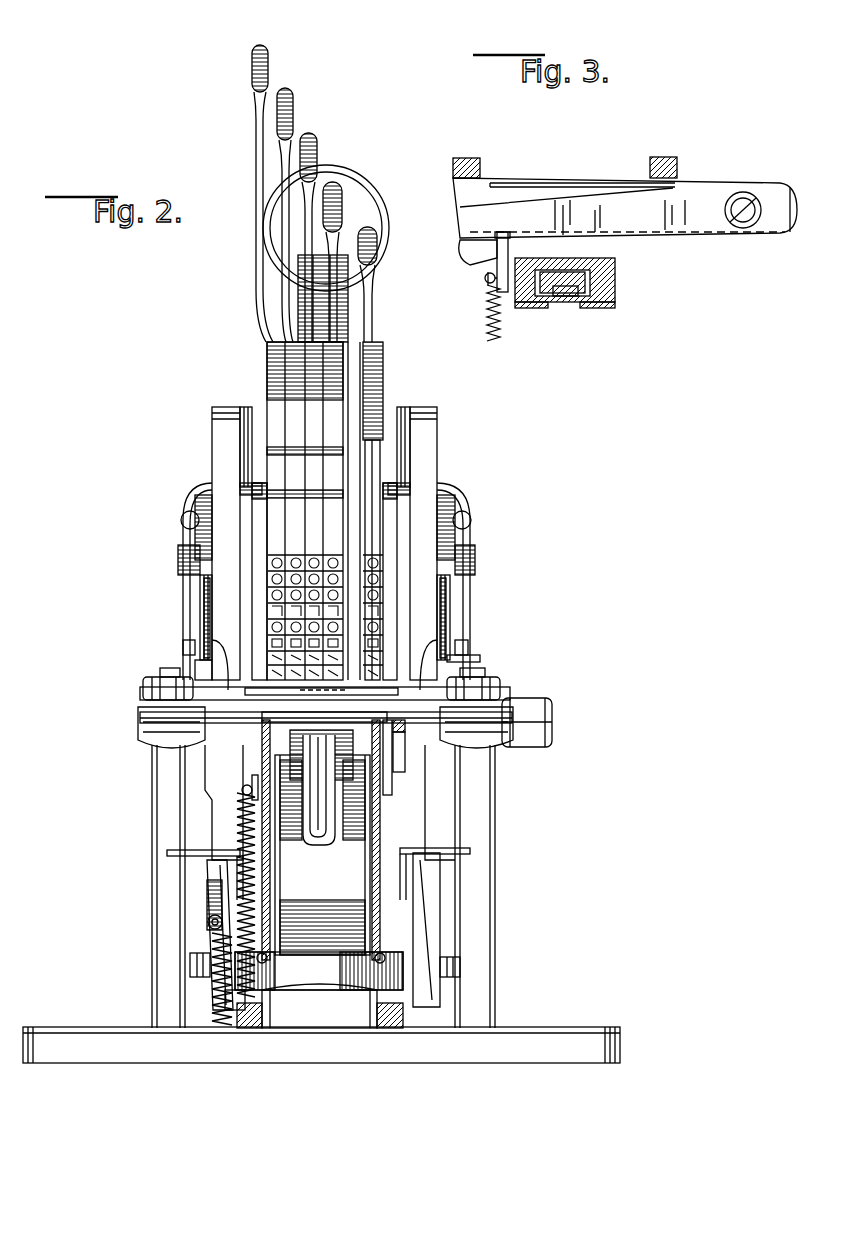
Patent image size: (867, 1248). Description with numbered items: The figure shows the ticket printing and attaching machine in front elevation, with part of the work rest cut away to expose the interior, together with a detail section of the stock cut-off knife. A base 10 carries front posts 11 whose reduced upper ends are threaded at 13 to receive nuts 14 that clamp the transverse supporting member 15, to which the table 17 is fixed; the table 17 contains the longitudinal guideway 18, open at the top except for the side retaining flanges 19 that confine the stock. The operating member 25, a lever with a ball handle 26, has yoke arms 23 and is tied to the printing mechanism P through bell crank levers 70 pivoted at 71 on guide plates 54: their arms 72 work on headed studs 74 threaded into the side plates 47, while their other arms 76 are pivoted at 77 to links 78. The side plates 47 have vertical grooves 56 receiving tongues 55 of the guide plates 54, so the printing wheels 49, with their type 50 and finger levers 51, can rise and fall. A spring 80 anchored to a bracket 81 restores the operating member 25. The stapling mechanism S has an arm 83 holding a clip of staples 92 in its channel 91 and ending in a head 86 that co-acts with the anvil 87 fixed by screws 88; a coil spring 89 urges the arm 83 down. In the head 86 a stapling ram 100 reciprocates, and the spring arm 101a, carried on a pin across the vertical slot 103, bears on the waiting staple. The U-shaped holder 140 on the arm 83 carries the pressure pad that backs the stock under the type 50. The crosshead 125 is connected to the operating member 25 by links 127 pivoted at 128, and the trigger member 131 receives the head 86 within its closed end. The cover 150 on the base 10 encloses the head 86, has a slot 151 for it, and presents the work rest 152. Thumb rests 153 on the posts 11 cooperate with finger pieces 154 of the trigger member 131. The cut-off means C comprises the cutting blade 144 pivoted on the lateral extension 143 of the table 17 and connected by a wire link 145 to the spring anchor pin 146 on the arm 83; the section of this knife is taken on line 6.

In FIG. 2, the section line 6- 6 is at (325, 5).
In FIG. 2, the base 10 is at (98, 1060).
In FIG. 2, the front posts 11 is at (150, 922).
In FIG. 2, the threaded upper end 13 is at (162, 672).
In FIG. 2, the nuts 14 is at (142, 680).
In FIG. 2, the transverse supporting member 15 is at (400, 740).
In FIG. 2, the table 17 is at (208, 698).
In FIG. 3, the table 17 is at (460, 194).
In FIG. 2, the longitudinal guideway 18 is at (170, 723).
In FIG. 3, the longitudinal guideway 18 is at (535, 180).
In FIG. 2, the side retaining flanges 19 is at (222, 672).
In FIG. 2, the yoke arms 23 is at (210, 830).
In FIG. 2, the operating member 25 is at (352, 320).
In FIG. 2, the ball handle 26 is at (352, 185).
In FIG. 2, the side plates 47 is at (248, 508).
In FIG. 2, the printing wheels 49 is at (318, 380).
In FIG. 2, the type 50 is at (290, 605).
In FIG. 2, the finger levers 51 is at (334, 185).
In FIG. 2, the guide plates 54 is at (222, 418).
In FIG. 3, the guide plates 54 is at (455, 160).
In FIG. 2, the vertical tongues 55 is at (246, 400).
In FIG. 2, the vertical grooves 56 is at (258, 500).
In FIG. 2, the bell crank levers 70 is at (198, 492).
In FIG. 2, the pivot 71 is at (182, 510).
In FIG. 2, the lever arms 72 is at (205, 528).
In FIG. 2, the headed studs 74 is at (183, 560).
In FIG. 2, the other lever arms 76 is at (200, 596).
In FIG. 2, the pivotal connection 77 is at (186, 658).
In FIG. 2, the links 78 is at (205, 610).
In FIG. 2, the spring 80 is at (205, 912).
In FIG. 2, the bracket 81 is at (210, 928).
In FIG. 3, the arm 83 is at (616, 272).
In FIG. 2, the head 86 is at (322, 855).
In FIG. 2, the anvil 87 is at (482, 660).
In FIG. 2, the screws 88 is at (212, 665).
In FIG. 2, the coil spring 89 is at (240, 815).
In FIG. 3, the coil spring 89 is at (485, 315).
In FIG. 3, the staple-receiving channel 91 is at (608, 286).
In FIG. 2, the clip of staples 92 is at (310, 812).
In FIG. 3, the clip of staples 92 is at (566, 304).
In FIG. 2, the stapling ram 100 is at (308, 843).
In FIG. 2, the spring arm 101a is at (320, 845).
In FIG. 2, the vertical slot 103 is at (326, 812).
In FIG. 2, the crosshead 125 is at (430, 997).
In FIG. 2, the links 127 is at (210, 880).
In FIG. 2, the pivotal connection 128 is at (190, 978).
In FIG. 2, the trigger member 131 is at (295, 975).
In FIG. 2, the U-shaped holder 140 is at (392, 775).
In FIG. 2, the lateral extension 143 is at (540, 732).
In FIG. 3, the lateral extension 143 is at (790, 182).
In FIG. 2, the cutting blade 144 is at (530, 710).
In FIG. 3, the cutting blade 144 is at (722, 232).
In FIG. 2, the wire link 145 is at (252, 782).
In FIG. 3, the wire link 145 is at (497, 262).
In FIG. 2, the spring anchor pin 146 is at (247, 794).
In FIG. 3, the spring anchor pin 146 is at (486, 283).
In FIG. 2, the cover 150 is at (352, 1020).
In FIG. 2, the slot 151 is at (348, 698).
In FIG. 2, the work rest 152 is at (292, 698).
In FIG. 2, the thumb rests 153 is at (165, 748).
In FIG. 2, the finger pieces 154 is at (168, 856).
In FIG. 2, the printing mechanism P is at (255, 352).
In FIG. 2, the cut-off means C is at (553, 749).
In FIG. 3, the cut-off means C is at (693, 245).
In FIG. 2, the stapling mechanism S is at (400, 804).
In FIG. 3, the stapling mechanism S is at (611, 311).